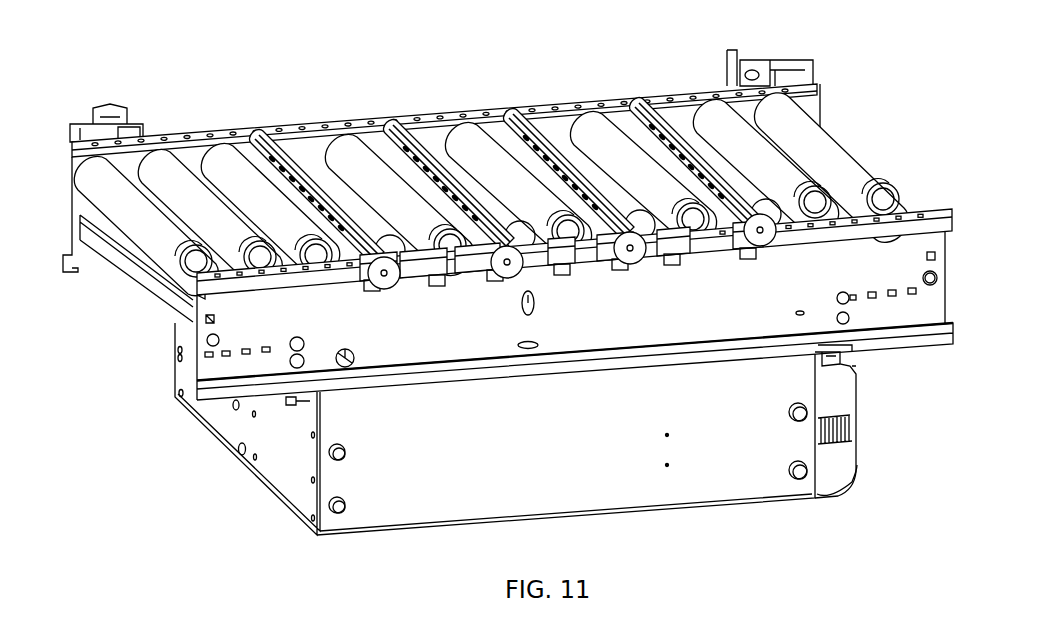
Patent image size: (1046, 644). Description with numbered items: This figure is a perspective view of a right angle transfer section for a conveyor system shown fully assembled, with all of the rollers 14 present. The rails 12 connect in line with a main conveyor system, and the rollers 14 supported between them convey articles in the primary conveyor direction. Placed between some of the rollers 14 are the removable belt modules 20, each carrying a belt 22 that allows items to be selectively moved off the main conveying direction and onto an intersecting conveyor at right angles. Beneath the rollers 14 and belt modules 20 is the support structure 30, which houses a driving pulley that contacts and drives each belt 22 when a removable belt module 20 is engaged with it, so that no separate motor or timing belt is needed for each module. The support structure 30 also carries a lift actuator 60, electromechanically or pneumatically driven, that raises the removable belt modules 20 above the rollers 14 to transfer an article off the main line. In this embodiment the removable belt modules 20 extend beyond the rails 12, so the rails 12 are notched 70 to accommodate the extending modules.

The rail 12 is at (272, 329).
The roller 14 is at (347, 138).
The removable belt module 20 is at (243, 123).
The belt 22 is at (280, 141).
The support structure 30 is at (253, 500).
The lift actuator 60 is at (870, 425).
The notch 70 is at (372, 291).